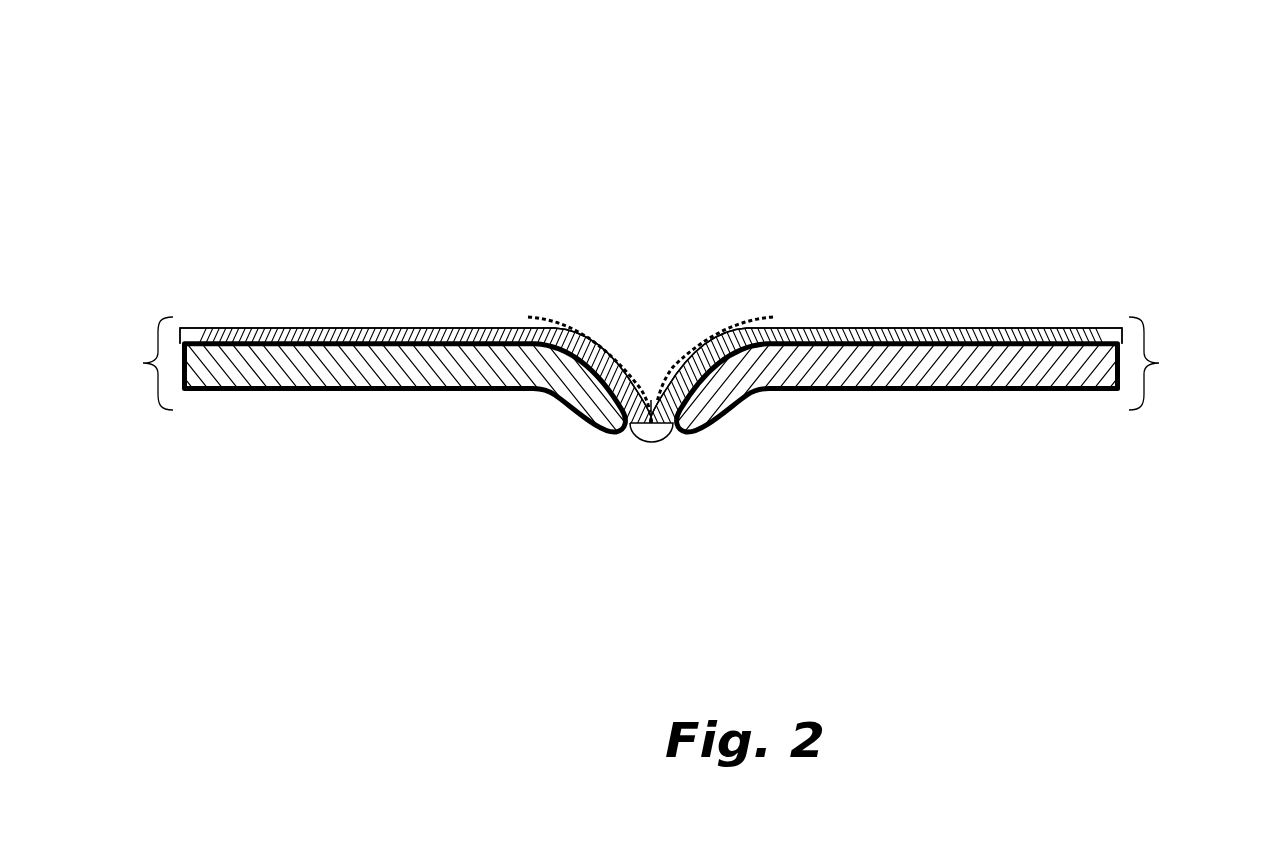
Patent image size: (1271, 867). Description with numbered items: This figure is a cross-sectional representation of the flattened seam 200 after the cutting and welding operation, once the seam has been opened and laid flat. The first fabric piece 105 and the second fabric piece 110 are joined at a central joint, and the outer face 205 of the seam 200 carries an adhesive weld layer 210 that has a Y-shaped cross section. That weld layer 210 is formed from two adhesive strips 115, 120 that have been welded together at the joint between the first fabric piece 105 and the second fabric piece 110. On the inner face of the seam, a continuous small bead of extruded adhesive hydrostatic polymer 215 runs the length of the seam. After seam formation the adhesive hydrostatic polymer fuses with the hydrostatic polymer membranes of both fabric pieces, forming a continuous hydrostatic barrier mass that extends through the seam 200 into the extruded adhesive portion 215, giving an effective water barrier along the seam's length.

The flattened seam 200 is at (323, 130).
The first fabric piece 105 is at (140, 362).
The second fabric piece 110 is at (1173, 362).
The outer face 205 is at (335, 297).
The adhesive weld layer 210 is at (655, 353).
The adhesive strip 115 is at (565, 323).
The adhesive strip 120 is at (715, 332).
The extruded adhesive hydrostatic polymer bead 215 is at (650, 433).